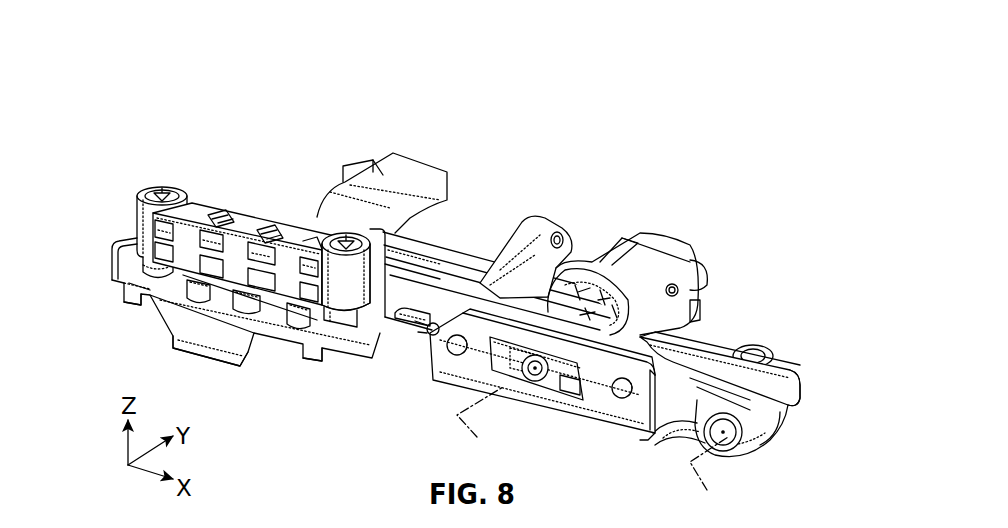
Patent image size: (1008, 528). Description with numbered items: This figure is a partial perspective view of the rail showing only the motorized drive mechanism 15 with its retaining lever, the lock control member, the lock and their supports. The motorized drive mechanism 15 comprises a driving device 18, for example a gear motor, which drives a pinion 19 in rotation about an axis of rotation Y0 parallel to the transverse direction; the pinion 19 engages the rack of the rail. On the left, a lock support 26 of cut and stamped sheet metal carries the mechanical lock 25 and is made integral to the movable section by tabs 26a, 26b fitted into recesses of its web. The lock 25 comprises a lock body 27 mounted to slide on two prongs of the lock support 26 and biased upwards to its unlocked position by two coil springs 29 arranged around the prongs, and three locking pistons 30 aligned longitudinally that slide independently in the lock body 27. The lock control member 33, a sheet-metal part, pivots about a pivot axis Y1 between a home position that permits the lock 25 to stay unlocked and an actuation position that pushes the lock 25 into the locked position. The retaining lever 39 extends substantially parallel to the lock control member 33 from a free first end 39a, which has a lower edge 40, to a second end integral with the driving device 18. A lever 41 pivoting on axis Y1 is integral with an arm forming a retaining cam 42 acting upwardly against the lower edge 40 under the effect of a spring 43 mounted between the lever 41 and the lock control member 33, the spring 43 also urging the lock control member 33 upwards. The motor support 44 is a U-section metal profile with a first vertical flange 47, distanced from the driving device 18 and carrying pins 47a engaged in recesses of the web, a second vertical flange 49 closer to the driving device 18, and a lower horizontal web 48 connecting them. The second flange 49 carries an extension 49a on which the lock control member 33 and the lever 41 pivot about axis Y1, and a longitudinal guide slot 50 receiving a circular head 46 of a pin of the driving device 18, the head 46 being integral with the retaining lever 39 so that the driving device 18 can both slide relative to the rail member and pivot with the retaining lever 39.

The motorized drive mechanism 15 is at (674, 246).
The driving device 18 is at (628, 242).
The pinion 19 is at (551, 330).
The mechanical lock 25 is at (145, 175).
The lock support 26 is at (108, 262).
The tab 26a is at (132, 300).
The tab 26b is at (206, 350).
The lock body 27 is at (198, 210).
The coil spring 29 is at (128, 284).
The locking pistons 30 is at (294, 318).
The lock control member 33 is at (410, 256).
The retaining lever 39 is at (790, 357).
The first end of retaining lever 39a is at (792, 392).
The lower edge of retaining lever 40 is at (790, 410).
The lever 41 is at (775, 441).
The retaining cam 42 is at (768, 414).
The spring 43 is at (740, 347).
The motor support 44 is at (640, 446).
The circular head 46 is at (433, 335).
The first vertical flange 47 is at (590, 408).
The pins 47a is at (456, 350).
The lower horizontal web 48 is at (653, 420).
The second vertical flange 49 is at (421, 288).
The extension 49a is at (692, 418).
The guide slot 50 is at (410, 325).
The axis of rotation Y0 is at (480, 425).
The pivot axis Y1 is at (709, 472).